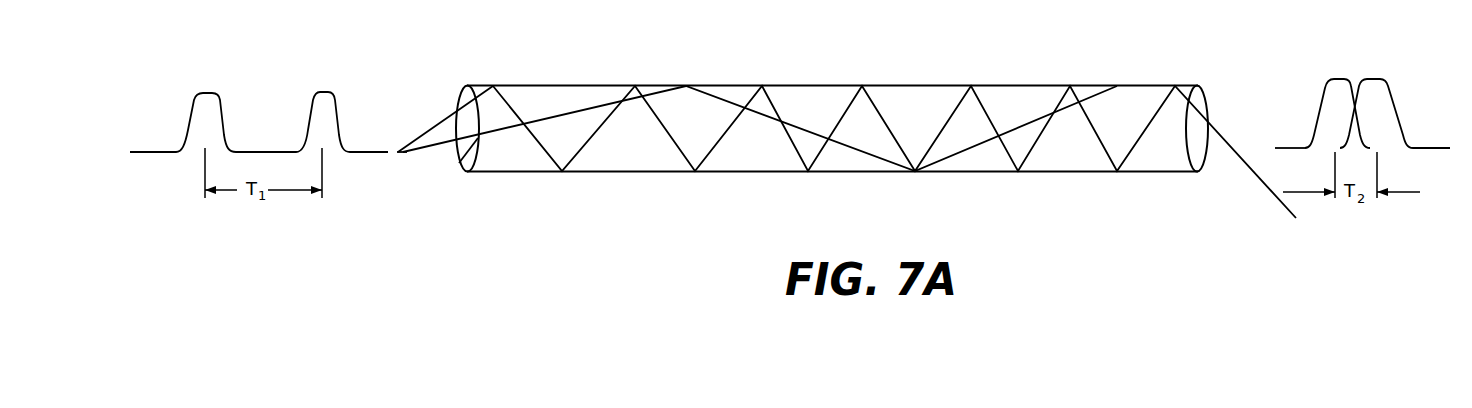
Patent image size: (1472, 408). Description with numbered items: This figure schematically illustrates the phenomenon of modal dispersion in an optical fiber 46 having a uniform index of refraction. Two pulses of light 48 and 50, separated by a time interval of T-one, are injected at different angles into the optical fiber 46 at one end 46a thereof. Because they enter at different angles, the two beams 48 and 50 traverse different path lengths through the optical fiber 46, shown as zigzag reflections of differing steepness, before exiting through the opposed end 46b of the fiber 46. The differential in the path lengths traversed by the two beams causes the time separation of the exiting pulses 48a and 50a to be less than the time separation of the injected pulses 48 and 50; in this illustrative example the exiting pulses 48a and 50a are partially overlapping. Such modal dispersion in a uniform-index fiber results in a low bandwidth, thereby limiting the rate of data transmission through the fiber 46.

The optical fiber 46 is at (517, 76).
The end of the optical fiber 46a is at (456, 166).
The opposed end of the fiber 46b is at (1193, 150).
The pulse of light 48 is at (230, 108).
The pulse of light 50 is at (328, 137).
The exiting pulse 48a is at (1325, 78).
The exiting pulse 50a is at (1385, 78).